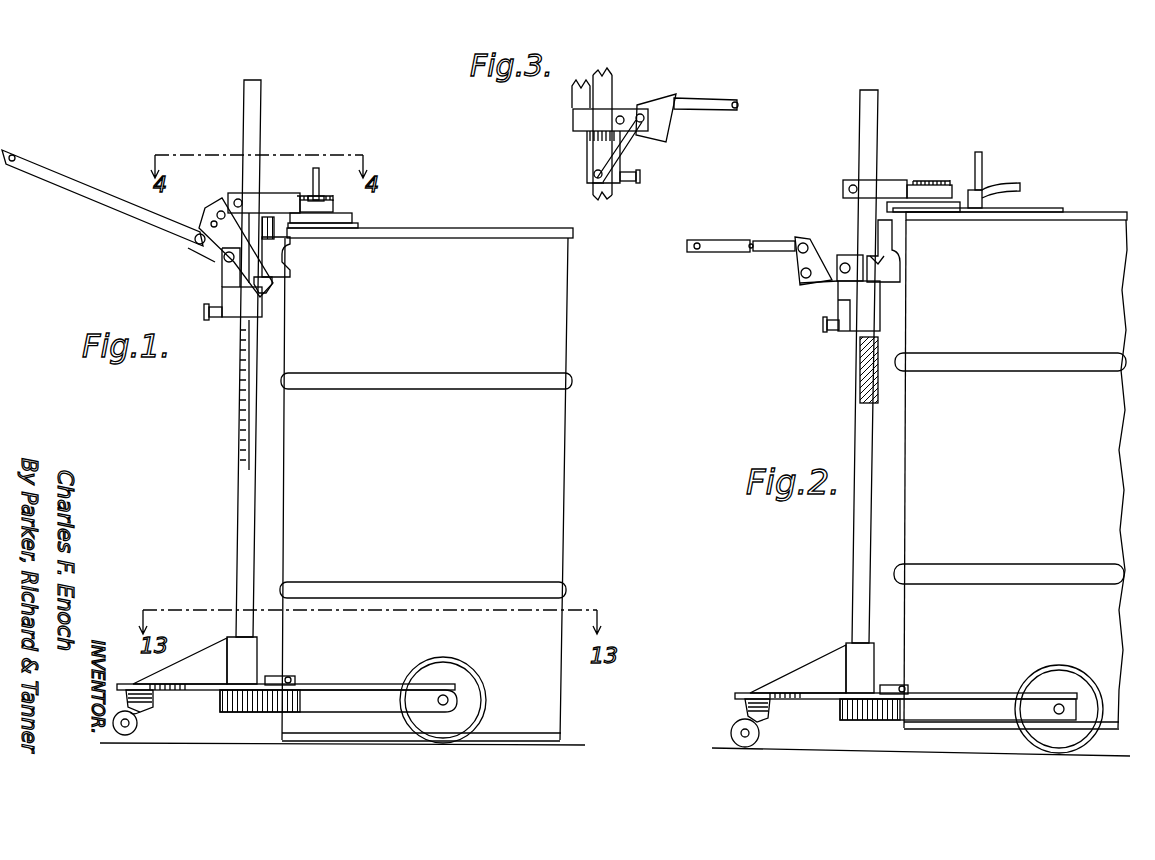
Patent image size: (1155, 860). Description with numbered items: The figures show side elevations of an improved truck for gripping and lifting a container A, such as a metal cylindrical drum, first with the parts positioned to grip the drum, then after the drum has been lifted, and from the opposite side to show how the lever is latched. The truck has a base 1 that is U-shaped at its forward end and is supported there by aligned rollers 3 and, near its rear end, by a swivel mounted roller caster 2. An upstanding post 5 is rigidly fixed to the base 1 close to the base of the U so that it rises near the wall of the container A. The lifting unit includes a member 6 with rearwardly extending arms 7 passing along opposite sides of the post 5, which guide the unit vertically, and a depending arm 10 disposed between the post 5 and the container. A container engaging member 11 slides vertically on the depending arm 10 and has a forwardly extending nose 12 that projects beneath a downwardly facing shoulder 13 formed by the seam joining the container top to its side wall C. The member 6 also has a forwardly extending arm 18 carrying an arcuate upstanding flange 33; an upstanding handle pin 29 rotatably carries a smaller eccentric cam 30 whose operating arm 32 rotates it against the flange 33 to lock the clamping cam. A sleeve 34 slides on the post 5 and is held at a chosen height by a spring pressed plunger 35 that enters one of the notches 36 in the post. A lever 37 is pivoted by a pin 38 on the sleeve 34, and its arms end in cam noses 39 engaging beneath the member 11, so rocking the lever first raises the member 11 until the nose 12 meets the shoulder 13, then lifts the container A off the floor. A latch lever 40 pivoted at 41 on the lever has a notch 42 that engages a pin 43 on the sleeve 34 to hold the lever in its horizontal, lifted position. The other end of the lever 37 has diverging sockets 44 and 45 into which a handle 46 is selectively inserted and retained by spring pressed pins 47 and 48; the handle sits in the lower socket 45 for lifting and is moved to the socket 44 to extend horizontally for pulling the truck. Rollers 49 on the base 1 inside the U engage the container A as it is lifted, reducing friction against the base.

In FIG. 1, the base 1 is at (268, 716).
In FIG. 2, the base 1 is at (828, 722).
In FIG. 1, the roller caster 2 is at (140, 724).
In FIG. 2, the roller caster 2 is at (733, 730).
In FIG. 1, the roller 3 is at (482, 673).
In FIG. 2, the roller 3 is at (1048, 670).
In FIG. 1, the post 5 is at (237, 492).
In FIG. 3, the post 5 is at (596, 197).
In FIG. 2, the post 5 is at (875, 122).
In FIG. 1, the member 6 is at (268, 198).
In FIG. 2, the member 6 is at (883, 183).
In FIG. 1, the arms 7 is at (240, 193).
In FIG. 2, the arms 7 is at (848, 178).
In FIG. 1, the depending arm 10 is at (265, 215).
In FIG. 2, the depending arm 10 is at (860, 200).
In FIG. 1, the container engaging member 11 is at (280, 258).
In FIG. 3, the container engaging member 11 is at (578, 82).
In FIG. 2, the container engaging member 11 is at (895, 240).
In FIG. 1, the nose 12 is at (292, 246).
In FIG. 2, the nose 12 is at (920, 225).
In FIG. 1, the shoulder 13 is at (452, 240).
In FIG. 2, the shoulder 13 is at (1062, 220).
In FIG. 1, the forwardly extending arm 18 is at (345, 212).
In FIG. 2, the forwardly extending arm 18 is at (925, 181).
In FIG. 1, the handle pin 29 is at (319, 200).
In FIG. 2, the handle pin 29 is at (985, 158).
In FIG. 2, the eccentric cam 30 is at (985, 200).
In FIG. 2, the operating arm 32 is at (1010, 183).
In FIG. 1, the arcuate upstanding flange 33 is at (365, 222).
In FIG. 2, the arcuate upstanding flange 33 is at (955, 200).
In FIG. 1, the sleeve 34 is at (262, 305).
In FIG. 3, the sleeve 34 is at (585, 135).
In FIG. 2, the sleeve 34 is at (880, 312).
In FIG. 1, the spring pressed plunger 35 is at (210, 315).
In FIG. 3, the spring pressed plunger 35 is at (642, 175).
In FIG. 2, the spring pressed plunger 35 is at (828, 326).
In FIG. 1, the notches 36 is at (238, 368).
In FIG. 2, the notches 36 is at (858, 392).
In FIG. 1, the lever 37 is at (215, 255).
In FIG. 3, the lever 37 is at (650, 98).
In FIG. 2, the lever 37 is at (812, 248).
In FIG. 1, the pivot pin 38 is at (224, 262).
In FIG. 3, the pivot pin 38 is at (620, 116).
In FIG. 2, the pivot pin 38 is at (846, 258).
In FIG. 1, the cam noses 39 is at (272, 283).
In FIG. 3, the cam noses 39 is at (573, 112).
In FIG. 2, the cam noses 39 is at (900, 268).
In FIG. 1, the latch lever 40 is at (231, 267).
In FIG. 3, the latch lever 40 is at (600, 155).
In FIG. 2, the latch lever 40 is at (845, 292).
In FIG. 1, the pivot 41 is at (214, 206).
In FIG. 3, the pivot 41 is at (641, 114).
In FIG. 3, the notch 42 is at (594, 176).
In FIG. 3, the pin 43 is at (592, 185).
In FIG. 1, the socket 44 is at (208, 220).
In FIG. 2, the socket 44 is at (805, 245).
In FIG. 1, the socket 45 is at (190, 248).
In FIG. 2, the socket 45 is at (835, 282).
In FIG. 1, the handle 46 is at (72, 178).
In FIG. 3, the handle 46 is at (715, 100).
In FIG. 2, the handle 46 is at (712, 254).
In FIG. 2, the spring pressed pin 47 is at (838, 262).
In FIG. 1, the spring pressed pin 48 is at (203, 246).
In FIG. 2, the spring pressed pin 48 is at (801, 272).
In FIG. 1, the rollers 49 is at (295, 680).
In FIG. 2, the rollers 49 is at (908, 688).
In FIG. 1, the container A is at (565, 511).
In FIG. 2, the container A is at (1122, 508).
In FIG. 1, the side wall C is at (488, 447).
In FIG. 2, the side wall C is at (1066, 420).